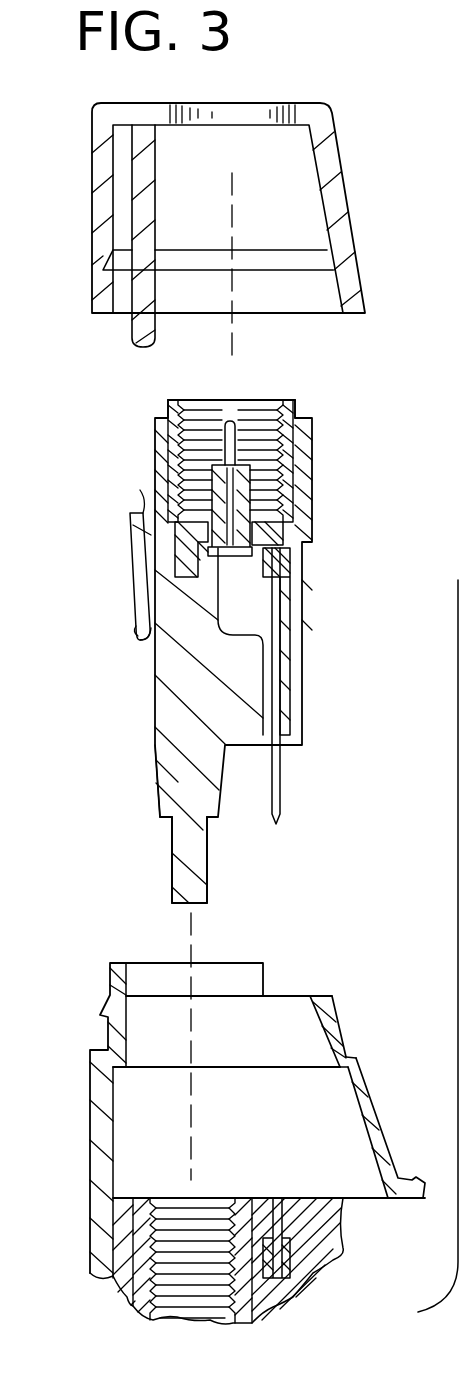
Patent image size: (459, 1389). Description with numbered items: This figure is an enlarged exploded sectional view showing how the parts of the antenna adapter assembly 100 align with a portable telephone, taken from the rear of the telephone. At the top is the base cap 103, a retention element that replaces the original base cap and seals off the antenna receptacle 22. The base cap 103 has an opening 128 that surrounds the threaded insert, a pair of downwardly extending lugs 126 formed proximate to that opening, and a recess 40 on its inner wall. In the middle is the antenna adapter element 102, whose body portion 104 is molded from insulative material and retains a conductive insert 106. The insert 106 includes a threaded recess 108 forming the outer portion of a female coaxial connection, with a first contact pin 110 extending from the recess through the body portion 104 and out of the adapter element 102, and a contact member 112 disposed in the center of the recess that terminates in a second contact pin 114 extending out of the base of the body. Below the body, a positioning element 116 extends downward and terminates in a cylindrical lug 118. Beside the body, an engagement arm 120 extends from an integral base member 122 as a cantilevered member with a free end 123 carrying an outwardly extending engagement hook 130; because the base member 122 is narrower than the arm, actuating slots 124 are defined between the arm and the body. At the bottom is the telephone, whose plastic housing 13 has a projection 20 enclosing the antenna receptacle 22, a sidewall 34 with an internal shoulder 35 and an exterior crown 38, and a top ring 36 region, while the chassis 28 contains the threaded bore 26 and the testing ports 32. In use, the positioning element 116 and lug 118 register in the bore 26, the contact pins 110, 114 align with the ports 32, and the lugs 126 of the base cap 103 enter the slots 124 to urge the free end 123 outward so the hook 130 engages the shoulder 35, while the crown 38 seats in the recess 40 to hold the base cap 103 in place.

The plastic housing 13 is at (89, 1229).
The projection 20 is at (392, 1139).
The antenna receptacle 22 is at (123, 1148).
The threaded bore 26 is at (160, 1210).
The chassis 28 is at (332, 1262).
The testing ports 32 is at (288, 1290).
The housing sidewall 34 is at (99, 1093).
The internal shoulder 35 is at (349, 1061).
The top ring 36 is at (117, 985).
The crown 38 is at (339, 1018).
The recess 40 is at (318, 262).
The adapter assembly 100 is at (457, 600).
The antenna adapter element 102 is at (145, 709).
The base cap 103 is at (92, 210).
The body portion 104 is at (166, 722).
The conductive insert 106 is at (304, 410).
The threaded recess 108 is at (184, 398).
The first contact pin 110 is at (276, 615).
The contact member 112 is at (229, 420).
The second contact pin 114 is at (267, 590).
The positioning element 116 is at (172, 764).
The cylindrical lug 118 is at (181, 872).
The engagement arm 120 is at (140, 582).
The base member 122 is at (144, 513).
The free end 123 is at (140, 641).
The actuating slots 124 is at (151, 531).
The lugs 126 is at (143, 222).
The opening 128 is at (296, 105).
The engagement hook 130 is at (137, 628).